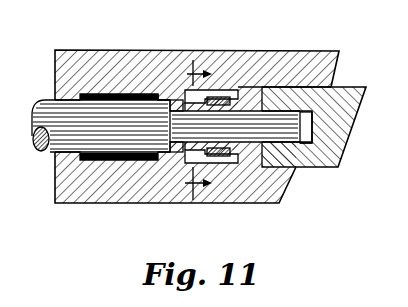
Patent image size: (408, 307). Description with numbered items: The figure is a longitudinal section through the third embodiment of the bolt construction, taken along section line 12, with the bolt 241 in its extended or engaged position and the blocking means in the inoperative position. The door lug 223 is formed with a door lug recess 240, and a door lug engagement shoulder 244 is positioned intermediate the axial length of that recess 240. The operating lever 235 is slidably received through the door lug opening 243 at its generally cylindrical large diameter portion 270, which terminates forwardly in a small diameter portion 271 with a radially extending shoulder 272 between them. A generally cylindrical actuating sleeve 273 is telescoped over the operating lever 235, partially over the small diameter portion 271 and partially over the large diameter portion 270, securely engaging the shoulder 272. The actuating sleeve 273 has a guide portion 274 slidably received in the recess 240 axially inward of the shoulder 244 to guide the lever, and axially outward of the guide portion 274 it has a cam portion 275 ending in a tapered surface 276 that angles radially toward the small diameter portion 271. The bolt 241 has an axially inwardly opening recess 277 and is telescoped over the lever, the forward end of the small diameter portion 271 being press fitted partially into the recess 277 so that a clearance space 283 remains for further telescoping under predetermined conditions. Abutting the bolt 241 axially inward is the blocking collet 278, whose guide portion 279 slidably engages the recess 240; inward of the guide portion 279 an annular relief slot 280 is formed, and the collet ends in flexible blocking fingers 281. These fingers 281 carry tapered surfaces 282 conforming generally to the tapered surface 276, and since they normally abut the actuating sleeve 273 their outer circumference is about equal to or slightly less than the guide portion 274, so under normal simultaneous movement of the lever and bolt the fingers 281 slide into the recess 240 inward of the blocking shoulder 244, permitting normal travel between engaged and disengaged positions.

The section line 12- 12 is at (190, 130).
The door lug 223 is at (75, 65).
The operating lever 235 is at (50, 153).
The door lug recess 240 is at (107, 160).
The bolt 241 is at (330, 157).
The shaft 243 is at (67, 98).
The door lug engagement shoulder 244 is at (218, 100).
The large diameter portion 270 is at (100, 111).
The small diameter portion 271 is at (285, 122).
The shoulder 272 is at (170, 100).
The actuating sleeve 273 is at (168, 185).
The guide portion 274 is at (160, 97).
The cam portion 275 is at (178, 104).
The tapered surface 276 is at (225, 92).
The recess 277 is at (324, 89).
The blocking collet 278 is at (249, 156).
The guide portion 279 is at (258, 150).
The annular relief slot 280 is at (228, 150).
The blocking fingers 281 is at (217, 150).
The tapered surfaces 282 is at (218, 112).
The clearance space 283 is at (305, 143).